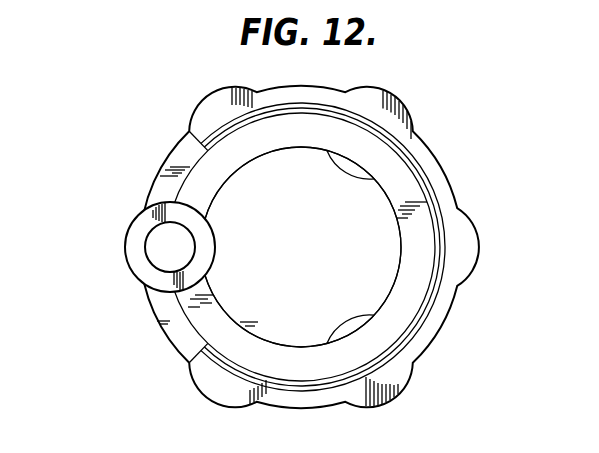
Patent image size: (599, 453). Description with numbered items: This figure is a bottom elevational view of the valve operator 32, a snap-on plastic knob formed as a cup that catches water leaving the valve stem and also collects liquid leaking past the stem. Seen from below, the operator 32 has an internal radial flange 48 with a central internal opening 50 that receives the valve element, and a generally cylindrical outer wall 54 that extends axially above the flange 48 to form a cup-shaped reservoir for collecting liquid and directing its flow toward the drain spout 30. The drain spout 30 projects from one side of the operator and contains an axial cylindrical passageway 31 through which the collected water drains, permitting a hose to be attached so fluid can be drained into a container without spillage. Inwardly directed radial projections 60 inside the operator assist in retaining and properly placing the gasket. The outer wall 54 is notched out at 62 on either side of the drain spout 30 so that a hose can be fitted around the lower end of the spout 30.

The drain spout 30 is at (130, 256).
The axial cylindrical passageway 31 is at (160, 258).
The valve operator 32 is at (447, 320).
The internal radial flange 48 is at (248, 152).
The internal opening 50 is at (291, 260).
The cylindrical outer wall 54 is at (425, 170).
The radial projections 60 is at (348, 173).
The notches 62 is at (165, 178).